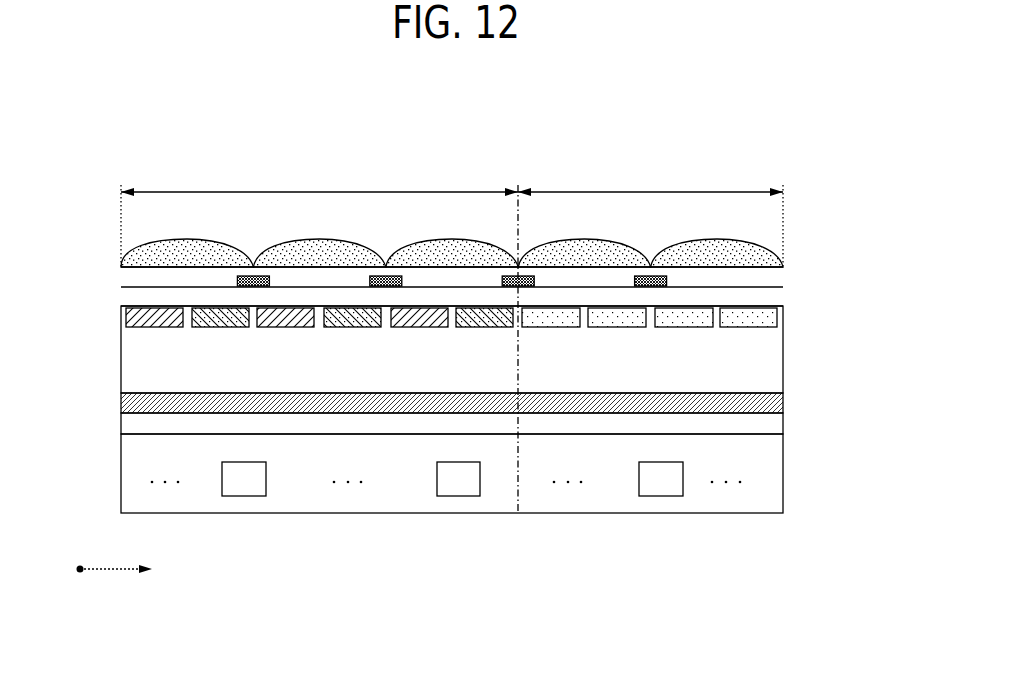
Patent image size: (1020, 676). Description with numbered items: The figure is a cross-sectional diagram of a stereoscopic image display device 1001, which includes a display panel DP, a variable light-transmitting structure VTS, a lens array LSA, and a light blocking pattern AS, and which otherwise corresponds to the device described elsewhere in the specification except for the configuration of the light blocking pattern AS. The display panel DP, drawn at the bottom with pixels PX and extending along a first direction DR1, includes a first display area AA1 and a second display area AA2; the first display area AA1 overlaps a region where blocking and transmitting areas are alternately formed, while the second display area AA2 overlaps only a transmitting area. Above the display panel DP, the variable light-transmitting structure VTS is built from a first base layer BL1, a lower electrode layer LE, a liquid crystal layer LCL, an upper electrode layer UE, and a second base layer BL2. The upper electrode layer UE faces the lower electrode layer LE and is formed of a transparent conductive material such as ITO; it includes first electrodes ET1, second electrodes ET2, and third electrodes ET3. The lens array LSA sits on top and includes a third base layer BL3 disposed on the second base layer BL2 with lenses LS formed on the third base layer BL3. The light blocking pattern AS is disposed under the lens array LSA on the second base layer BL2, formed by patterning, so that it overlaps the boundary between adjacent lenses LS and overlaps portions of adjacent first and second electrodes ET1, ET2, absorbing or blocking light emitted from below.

The stereoscopic image display device 1001 is at (539, 128).
The first display area AA1 is at (319, 213).
The second display area AA2 is at (650, 213).
The light blocking pattern AS is at (258, 276).
The lenses LS is at (764, 246).
The third base layer BL3 is at (775, 277).
The second base layer BL2 is at (775, 299).
The lens array LSA is at (510, 257).
The first electrodes ET1 is at (126, 313).
The second electrodes ET2 is at (204, 329).
The third electrodes ET3 is at (566, 328).
The liquid crystal layer LCL is at (775, 354).
The variable light-transmitting structure VTS is at (475, 466).
The lower electrode layer LE is at (775, 400).
The first base layer BL1 is at (486, 427).
The display panel DP is at (775, 472).
The pixel PX is at (446, 479).
The first direction DR1 is at (133, 569).
The upper electrode layer UE is at (415, 467).